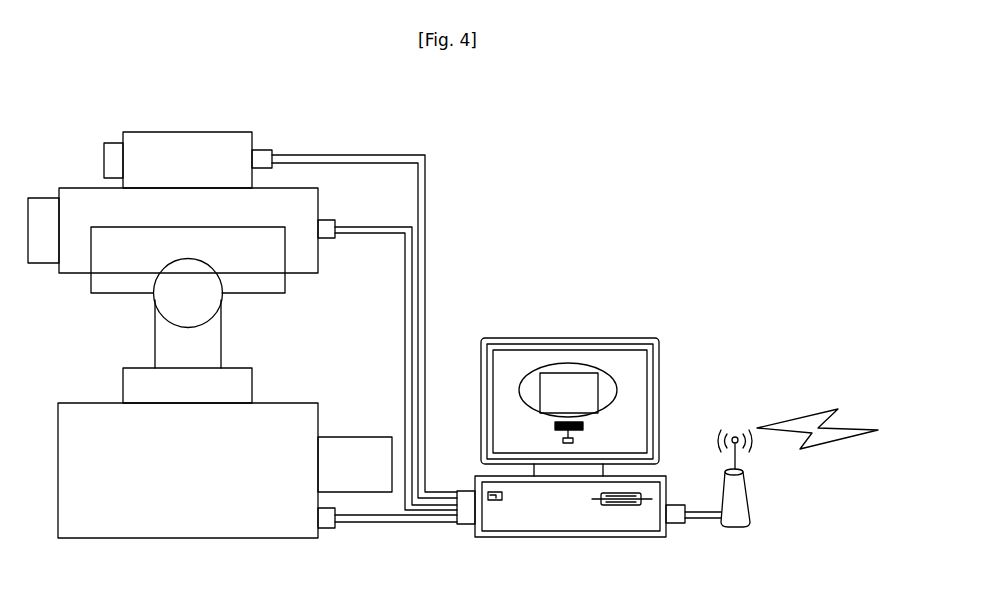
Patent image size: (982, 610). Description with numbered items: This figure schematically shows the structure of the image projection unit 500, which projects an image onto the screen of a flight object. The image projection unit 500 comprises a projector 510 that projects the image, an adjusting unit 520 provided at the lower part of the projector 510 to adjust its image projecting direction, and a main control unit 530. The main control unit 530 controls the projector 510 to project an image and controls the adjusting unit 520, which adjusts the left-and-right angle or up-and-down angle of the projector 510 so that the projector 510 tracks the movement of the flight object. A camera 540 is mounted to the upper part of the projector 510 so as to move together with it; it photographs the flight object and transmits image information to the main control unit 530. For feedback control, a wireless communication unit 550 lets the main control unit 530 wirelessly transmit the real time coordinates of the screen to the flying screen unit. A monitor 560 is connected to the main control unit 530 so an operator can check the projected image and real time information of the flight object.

The image projection unit 500 is at (509, 152).
The projector 510 is at (97, 188).
The adjusting unit 520 is at (123, 387).
The main control unit 530 is at (568, 537).
The camera 540 is at (187, 132).
The wireless communication unit 550 is at (747, 493).
The monitor 560 is at (568, 338).